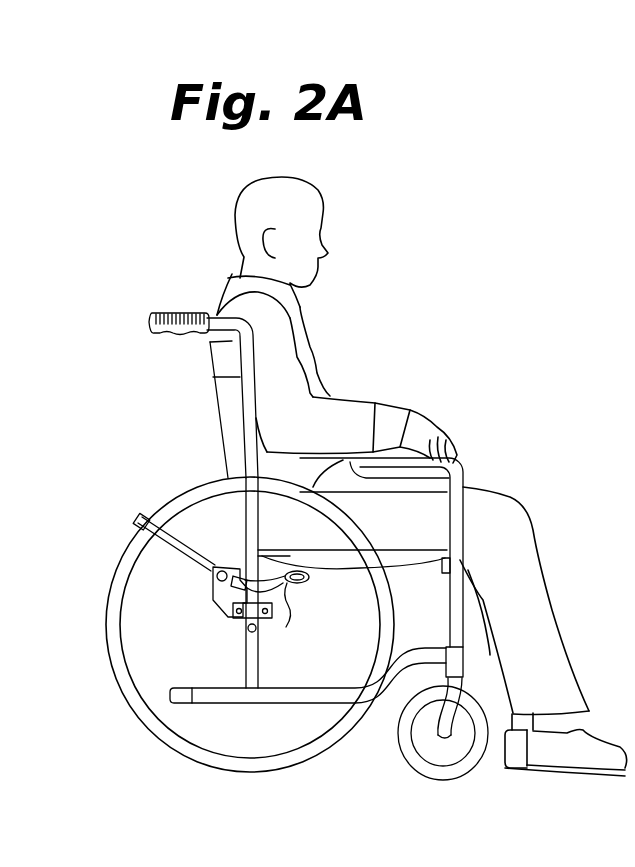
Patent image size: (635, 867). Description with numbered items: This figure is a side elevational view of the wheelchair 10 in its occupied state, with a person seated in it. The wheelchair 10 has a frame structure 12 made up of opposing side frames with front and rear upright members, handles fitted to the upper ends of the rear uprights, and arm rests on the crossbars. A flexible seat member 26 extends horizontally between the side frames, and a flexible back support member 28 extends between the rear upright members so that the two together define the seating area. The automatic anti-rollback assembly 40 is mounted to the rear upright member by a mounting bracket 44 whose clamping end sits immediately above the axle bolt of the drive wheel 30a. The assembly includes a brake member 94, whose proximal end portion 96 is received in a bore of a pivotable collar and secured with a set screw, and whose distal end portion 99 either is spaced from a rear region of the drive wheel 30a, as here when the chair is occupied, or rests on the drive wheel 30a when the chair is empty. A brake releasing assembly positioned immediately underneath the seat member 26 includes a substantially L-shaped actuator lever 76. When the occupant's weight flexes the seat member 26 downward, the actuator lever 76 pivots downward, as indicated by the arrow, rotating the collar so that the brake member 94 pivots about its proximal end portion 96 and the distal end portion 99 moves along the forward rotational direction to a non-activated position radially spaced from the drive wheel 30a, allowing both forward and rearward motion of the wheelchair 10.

The wheelchair 10 is at (150, 292).
The frame structure 12 is at (213, 378).
The flexible back support member 28 is at (230, 423).
The flexible seat member 26 is at (430, 572).
The drive wheel 30a is at (118, 663).
The distal end portion 99 is at (133, 487).
The brake member 94 is at (185, 557).
The automatic anti-rollback assembly 40 is at (186, 583).
The proximal end portion 96 is at (212, 600).
The mounting bracket 44 is at (236, 617).
The actuator lever 76 is at (301, 594).